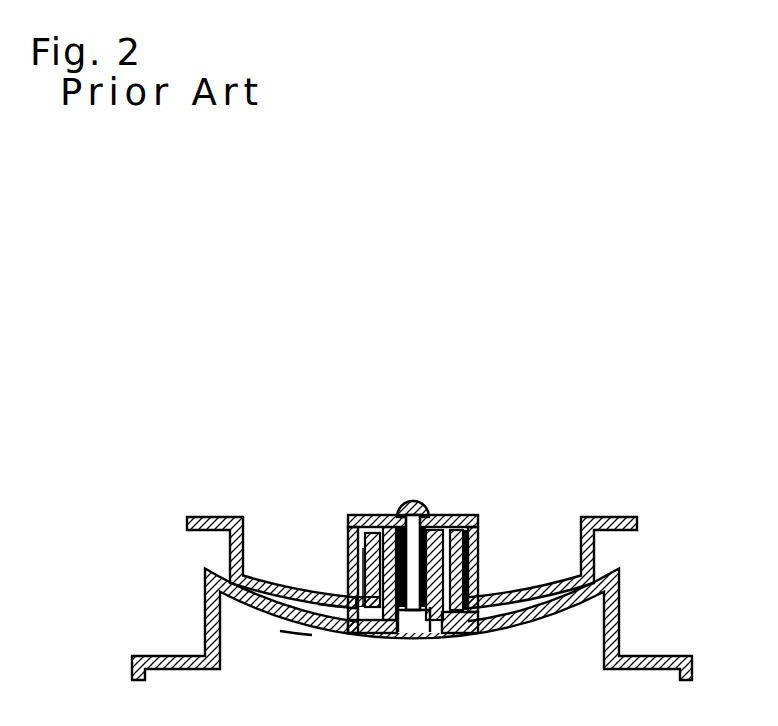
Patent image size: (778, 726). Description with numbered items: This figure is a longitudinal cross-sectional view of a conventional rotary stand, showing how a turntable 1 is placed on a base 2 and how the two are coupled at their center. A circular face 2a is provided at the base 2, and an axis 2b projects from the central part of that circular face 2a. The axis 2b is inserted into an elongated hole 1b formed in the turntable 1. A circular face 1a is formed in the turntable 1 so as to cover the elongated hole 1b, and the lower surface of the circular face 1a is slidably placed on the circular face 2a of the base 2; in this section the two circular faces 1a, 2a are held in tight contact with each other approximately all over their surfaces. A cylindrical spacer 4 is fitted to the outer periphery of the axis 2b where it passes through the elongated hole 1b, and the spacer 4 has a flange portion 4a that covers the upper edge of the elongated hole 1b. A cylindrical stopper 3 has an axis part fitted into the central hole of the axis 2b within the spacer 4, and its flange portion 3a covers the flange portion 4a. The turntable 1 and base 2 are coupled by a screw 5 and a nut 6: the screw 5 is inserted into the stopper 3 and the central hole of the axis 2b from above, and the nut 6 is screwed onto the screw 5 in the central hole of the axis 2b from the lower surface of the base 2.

The turntable 1 is at (222, 515).
The circular face 1a is at (333, 606).
The elongated hole 1b is at (348, 558).
The base 2 is at (205, 603).
The circular face 2a is at (296, 630).
The axis 2b is at (383, 515).
The cylindrical stopper 3 is at (452, 515).
The flange portion 3a is at (482, 522).
The cylindrical spacer 4 is at (480, 562).
The flange portion 4a is at (482, 537).
The screw 5 is at (424, 505).
The nut 6 is at (402, 632).